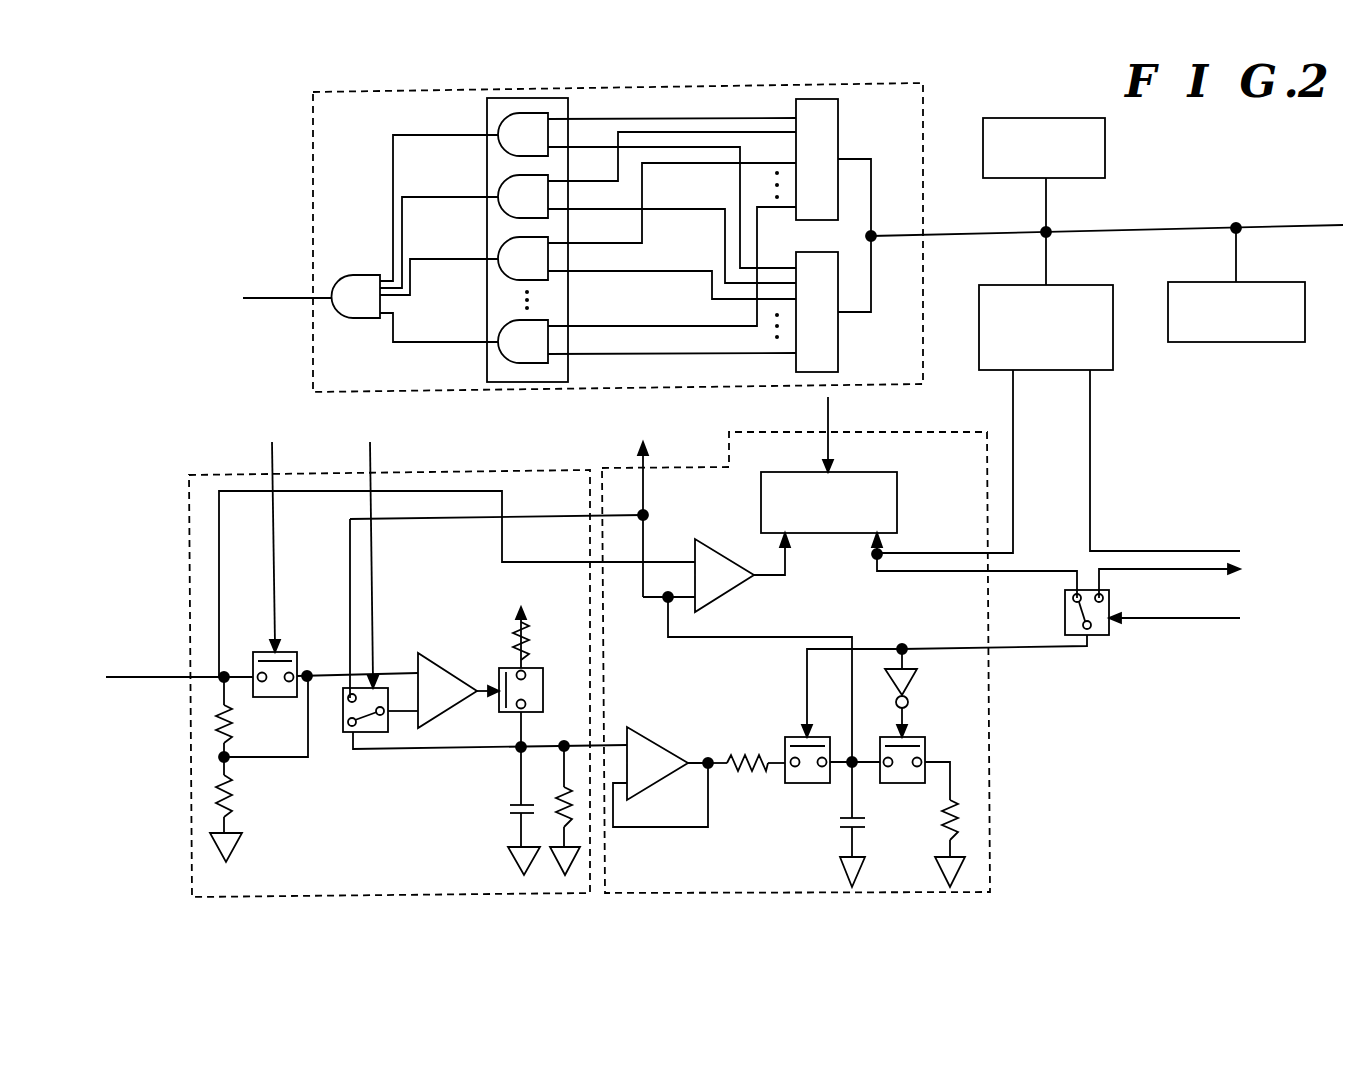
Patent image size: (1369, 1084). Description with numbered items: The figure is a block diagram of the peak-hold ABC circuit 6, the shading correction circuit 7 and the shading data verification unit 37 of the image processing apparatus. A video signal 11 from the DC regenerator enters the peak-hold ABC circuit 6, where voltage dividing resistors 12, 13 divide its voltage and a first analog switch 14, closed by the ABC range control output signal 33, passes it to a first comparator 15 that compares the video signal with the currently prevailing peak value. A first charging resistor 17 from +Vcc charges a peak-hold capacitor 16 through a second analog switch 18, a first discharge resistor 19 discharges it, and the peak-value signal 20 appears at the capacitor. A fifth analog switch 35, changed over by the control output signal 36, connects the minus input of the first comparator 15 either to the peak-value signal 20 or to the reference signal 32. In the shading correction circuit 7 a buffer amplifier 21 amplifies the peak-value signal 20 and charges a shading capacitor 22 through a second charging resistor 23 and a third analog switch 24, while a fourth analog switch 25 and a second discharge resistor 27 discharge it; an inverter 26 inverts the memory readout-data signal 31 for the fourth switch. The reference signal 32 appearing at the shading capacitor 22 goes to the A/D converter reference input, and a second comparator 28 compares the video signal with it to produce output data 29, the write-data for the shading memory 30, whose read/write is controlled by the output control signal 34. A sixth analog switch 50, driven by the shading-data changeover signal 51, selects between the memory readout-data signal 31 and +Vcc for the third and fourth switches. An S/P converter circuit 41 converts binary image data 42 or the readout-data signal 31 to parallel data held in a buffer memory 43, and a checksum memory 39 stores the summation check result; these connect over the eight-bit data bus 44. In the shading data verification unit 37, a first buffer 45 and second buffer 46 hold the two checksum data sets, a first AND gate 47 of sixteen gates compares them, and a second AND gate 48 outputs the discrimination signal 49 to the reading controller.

The peak-hold ABC circuit 6 is at (492, 472).
The shading correction circuit 7 is at (778, 432).
The video signal 11 is at (163, 680).
The voltage dividing resistor 12 is at (233, 724).
The voltage dividing resistor 13 is at (233, 800).
The first analog switch 14 is at (298, 652).
The first comparator 15 is at (455, 672).
The peak-hold capacitor 16 is at (512, 803).
The first charging resistor 17 is at (530, 630).
The second analog switch 18 is at (543, 698).
The first discharge resistor 19 is at (560, 803).
The peak-value signal 20 is at (535, 747).
The buffer amplifier 21 is at (661, 746).
The shading capacitor 22 is at (848, 823).
The second charging resistor 23 is at (740, 758).
The third analog switch 24 is at (795, 737).
The fourth analog switch 25 is at (925, 760).
The inverter 26 is at (918, 688).
The second discharge resistor 27 is at (928, 843).
The second comparator 28 is at (733, 594).
The output data 29 is at (786, 558).
The shading memory 30 is at (897, 505).
The memory readout-data signal 31 is at (890, 580).
The reference signal 32 is at (640, 456).
The control output signal 33 is at (272, 472).
The output control signal 34 is at (832, 420).
The fifth analog switch 35 is at (350, 735).
The control output signal 36 is at (372, 465).
The shading data verification unit 37 is at (312, 185).
The checksum memory 39 is at (1255, 282).
The serial/parallel converter circuit 41 is at (1073, 285).
The binary image data 42 is at (1130, 551).
The buffer memory 43 is at (1105, 145).
The eight-bit data bus 44 is at (1125, 228).
The first buffer 45 is at (838, 142).
The second buffer 46 is at (838, 362).
The first AND gate 47 is at (487, 118).
The second AND gate 48 is at (363, 275).
The discrimination signal 49 is at (292, 297).
The sixth analog switch 50 is at (1065, 603).
The shading-data changeover signal 51 is at (1165, 620).